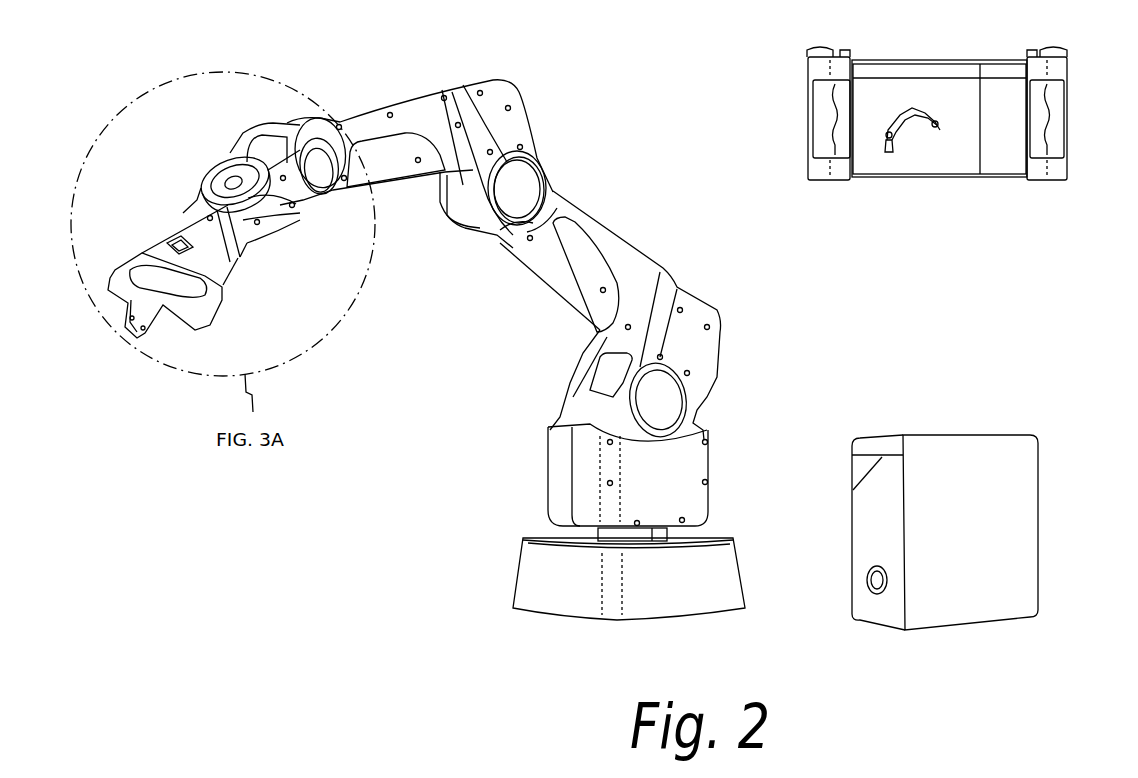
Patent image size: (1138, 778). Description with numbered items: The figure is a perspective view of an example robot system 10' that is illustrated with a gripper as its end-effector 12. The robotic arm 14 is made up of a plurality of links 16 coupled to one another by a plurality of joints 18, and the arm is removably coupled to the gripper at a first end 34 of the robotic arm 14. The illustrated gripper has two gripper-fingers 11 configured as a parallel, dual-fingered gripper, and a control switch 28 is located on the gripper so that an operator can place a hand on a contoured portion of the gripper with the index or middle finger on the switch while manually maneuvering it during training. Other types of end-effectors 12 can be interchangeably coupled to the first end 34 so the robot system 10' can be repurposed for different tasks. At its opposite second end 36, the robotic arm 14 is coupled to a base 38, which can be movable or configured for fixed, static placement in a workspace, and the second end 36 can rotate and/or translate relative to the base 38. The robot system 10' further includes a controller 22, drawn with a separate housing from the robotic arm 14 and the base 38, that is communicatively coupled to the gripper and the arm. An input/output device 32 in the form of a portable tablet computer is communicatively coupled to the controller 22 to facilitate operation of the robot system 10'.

The robot system 10' is at (668, 7).
The gripper-fingers 11 is at (125, 322).
The end-effector 12 is at (143, 248).
The robotic arm 14 is at (632, 218).
The links 16 is at (413, 103).
The joints 18 is at (215, 178).
The controller 22 is at (1025, 524).
The control switch 28 is at (170, 240).
The input/output device 32 is at (1060, 170).
The first end 34 is at (252, 266).
The second end 36 is at (527, 518).
The base 38 is at (527, 568).